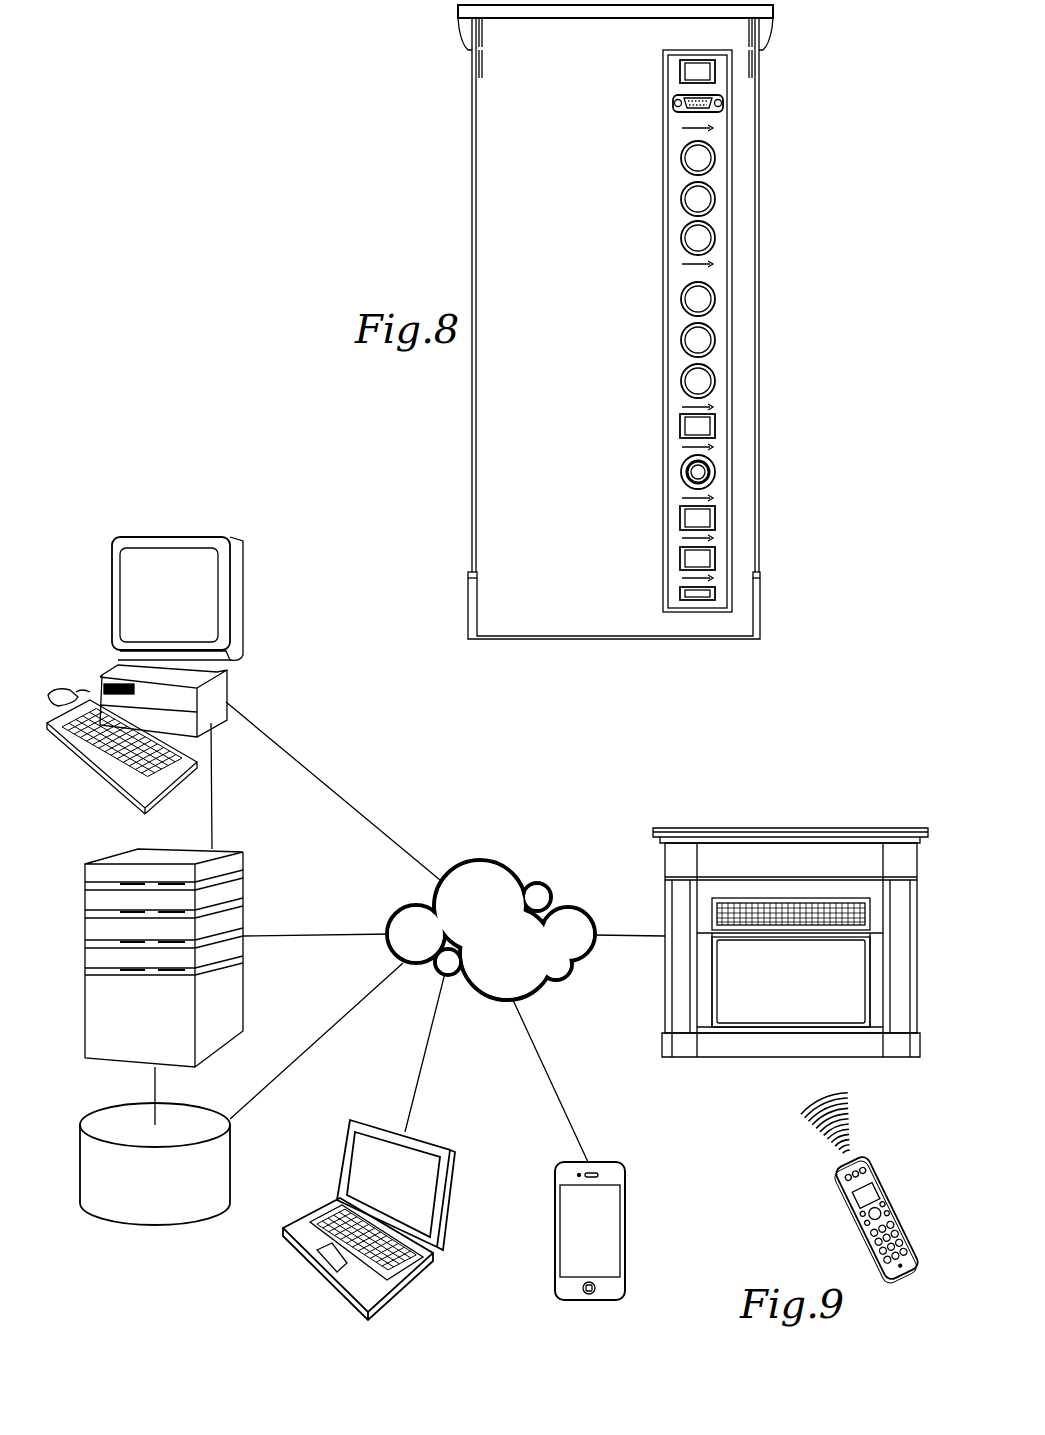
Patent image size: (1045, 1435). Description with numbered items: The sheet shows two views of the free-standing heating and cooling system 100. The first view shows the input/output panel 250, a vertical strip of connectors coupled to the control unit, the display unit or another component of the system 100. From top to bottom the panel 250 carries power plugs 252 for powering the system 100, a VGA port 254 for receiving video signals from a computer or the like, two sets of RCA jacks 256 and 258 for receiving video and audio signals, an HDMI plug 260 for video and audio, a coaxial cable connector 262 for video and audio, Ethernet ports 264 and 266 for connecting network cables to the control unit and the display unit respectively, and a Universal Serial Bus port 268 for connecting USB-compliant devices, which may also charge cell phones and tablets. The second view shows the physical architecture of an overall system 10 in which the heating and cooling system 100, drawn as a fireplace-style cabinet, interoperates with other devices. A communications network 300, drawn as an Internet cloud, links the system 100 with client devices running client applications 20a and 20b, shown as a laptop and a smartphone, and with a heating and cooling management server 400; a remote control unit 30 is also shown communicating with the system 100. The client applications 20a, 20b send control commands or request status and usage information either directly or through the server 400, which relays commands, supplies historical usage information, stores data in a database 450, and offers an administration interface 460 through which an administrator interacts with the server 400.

In FIG. 8, the free-standing heating and cooling system 100 is at (432, 129).
In FIG. 9, the free-standing heating and cooling system 100 is at (823, 830).
In FIG. 8, the input/output panel 250 is at (735, 277).
In FIG. 8, the power plugs 252 is at (712, 70).
In FIG. 8, the VGA port 254 is at (722, 103).
In FIG. 8, the RCA jacks 256 is at (722, 199).
In FIG. 8, the RCA jacks 258 is at (722, 340).
In FIG. 8, the HDMI plug 260 is at (712, 425).
In FIG. 8, the coaxial cable connector 262 is at (716, 472).
In FIG. 8, the Ethernet port 264 is at (712, 518).
In FIG. 8, the Ethernet port 266 is at (712, 558).
In FIG. 8, the Universal Serial Bus (USB) port 268 is at (712, 594).
In FIG. 9, the system 10 is at (556, 828).
In FIG. 9, the communications network 300 is at (480, 862).
In FIG. 9, the heating and cooling management server 400 is at (237, 890).
In FIG. 9, the database 450 is at (153, 1225).
In FIG. 9, the administration interface 460 is at (172, 537).
In FIG. 9, the client application 20a is at (407, 1278).
In FIG. 9, the client application 20b is at (626, 1225).
In FIG. 9, the remote control unit 30 is at (862, 1238).